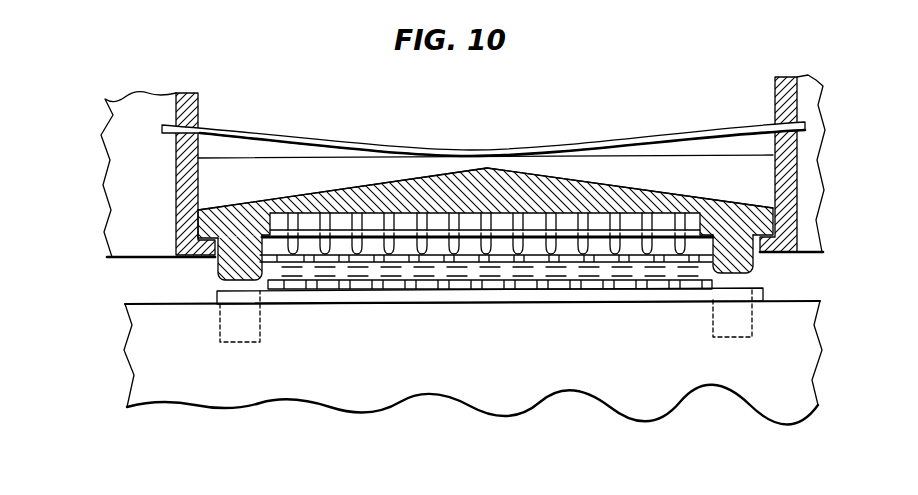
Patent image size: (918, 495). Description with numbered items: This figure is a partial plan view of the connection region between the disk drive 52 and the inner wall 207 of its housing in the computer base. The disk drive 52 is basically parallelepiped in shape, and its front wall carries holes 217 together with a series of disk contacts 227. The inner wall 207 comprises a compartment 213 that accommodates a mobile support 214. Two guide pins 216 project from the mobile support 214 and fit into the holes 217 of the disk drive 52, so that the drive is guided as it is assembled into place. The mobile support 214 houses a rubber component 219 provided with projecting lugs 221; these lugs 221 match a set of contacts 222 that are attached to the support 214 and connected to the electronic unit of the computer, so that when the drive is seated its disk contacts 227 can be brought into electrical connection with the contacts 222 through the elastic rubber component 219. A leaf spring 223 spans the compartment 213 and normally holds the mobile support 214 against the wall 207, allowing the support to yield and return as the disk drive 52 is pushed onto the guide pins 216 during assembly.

The disk drive 52 is at (158, 360).
The inner wall 207 is at (130, 258).
The compartment 213 is at (205, 137).
The mobile support 214 is at (490, 178).
The guide pins 216 is at (220, 268).
The holes 217 is at (257, 322).
The rubber component 219 is at (648, 222).
The projecting lugs 221 is at (298, 210).
The set of contacts 222 is at (412, 268).
The leaf spring 223 is at (580, 150).
The disk contacts 227 is at (495, 268).